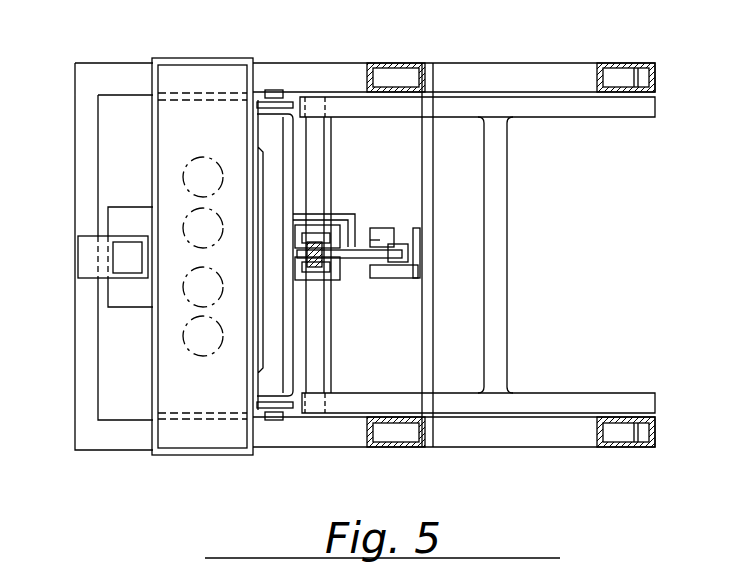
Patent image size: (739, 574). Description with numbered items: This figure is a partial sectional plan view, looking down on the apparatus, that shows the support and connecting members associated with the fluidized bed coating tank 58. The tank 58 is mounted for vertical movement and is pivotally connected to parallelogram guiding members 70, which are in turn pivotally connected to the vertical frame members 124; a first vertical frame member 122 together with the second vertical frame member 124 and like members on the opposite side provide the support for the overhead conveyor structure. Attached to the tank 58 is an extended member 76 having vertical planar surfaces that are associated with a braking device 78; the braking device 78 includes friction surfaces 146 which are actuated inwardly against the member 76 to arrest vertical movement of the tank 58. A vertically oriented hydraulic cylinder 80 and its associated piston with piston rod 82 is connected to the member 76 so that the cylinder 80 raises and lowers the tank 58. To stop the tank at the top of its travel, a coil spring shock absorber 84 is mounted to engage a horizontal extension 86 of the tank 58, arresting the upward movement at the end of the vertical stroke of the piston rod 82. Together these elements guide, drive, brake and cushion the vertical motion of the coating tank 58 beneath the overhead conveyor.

The fluidized bed coating tank 58 is at (228, 57).
The parallelogram guiding member 70 is at (593, 107).
The extended member 76 is at (353, 262).
The braking device 78 is at (386, 240).
The hydraulic cylinder 80 is at (325, 276).
The piston rod 82 is at (315, 268).
The coil spring shock absorber 84 is at (128, 255).
The horizontal extension 86 is at (124, 292).
The first vertical frame member 122 is at (403, 63).
The second vertical frame member 124 is at (654, 72).
The friction surfaces 146 is at (376, 240).